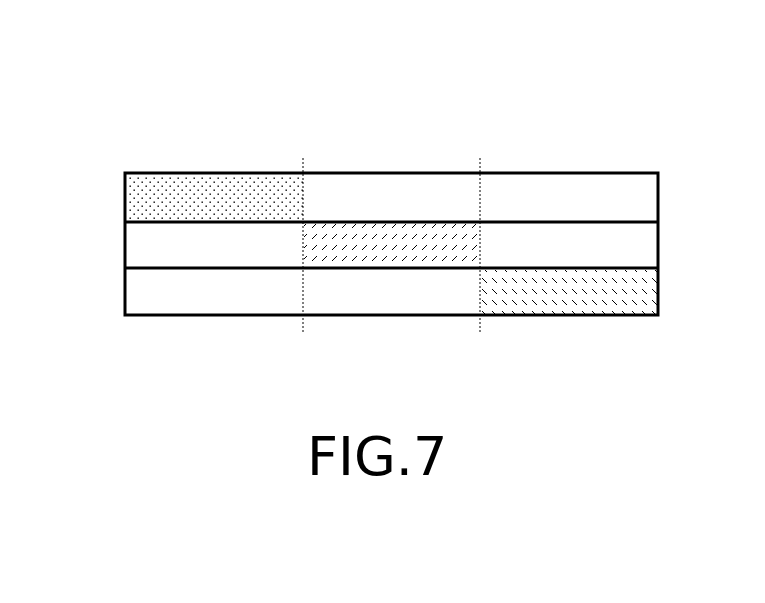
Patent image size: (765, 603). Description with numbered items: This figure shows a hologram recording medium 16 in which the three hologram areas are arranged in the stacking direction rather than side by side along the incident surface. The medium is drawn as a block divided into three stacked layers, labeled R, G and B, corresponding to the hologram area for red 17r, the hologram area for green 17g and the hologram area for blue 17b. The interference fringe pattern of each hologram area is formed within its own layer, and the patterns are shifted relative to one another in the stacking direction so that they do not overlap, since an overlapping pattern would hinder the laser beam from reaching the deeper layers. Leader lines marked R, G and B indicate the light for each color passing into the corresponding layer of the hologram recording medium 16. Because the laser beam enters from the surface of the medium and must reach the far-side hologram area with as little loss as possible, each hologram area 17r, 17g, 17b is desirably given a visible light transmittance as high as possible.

The hologram recording medium 16 is at (346, 276).
The hologram area for red 17r is at (193, 307).
The hologram area for green 17g is at (388, 308).
The hologram area for blue 17b is at (542, 308).
The red light path R is at (290, 360).
The green light path G is at (448, 360).
The blue light path B is at (602, 365).